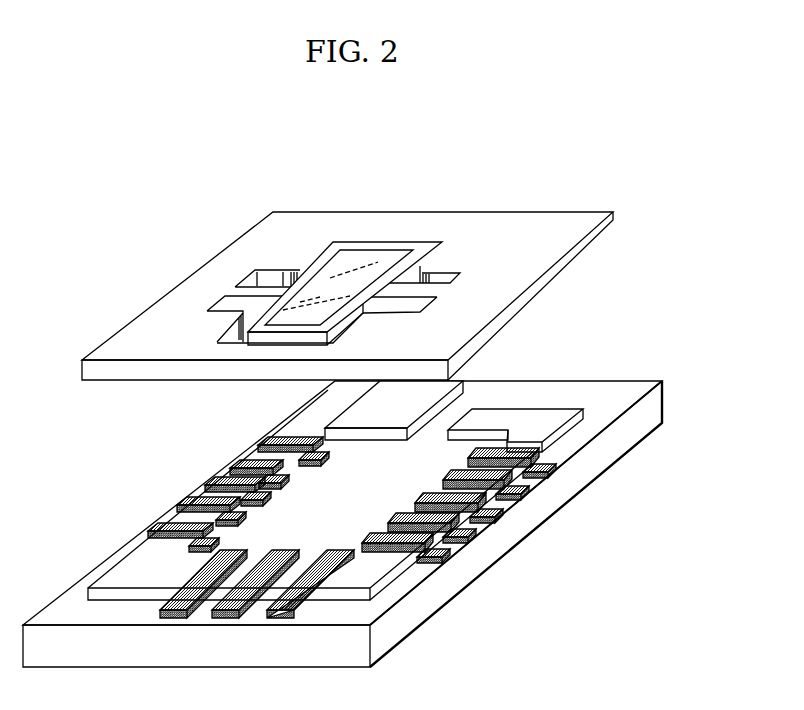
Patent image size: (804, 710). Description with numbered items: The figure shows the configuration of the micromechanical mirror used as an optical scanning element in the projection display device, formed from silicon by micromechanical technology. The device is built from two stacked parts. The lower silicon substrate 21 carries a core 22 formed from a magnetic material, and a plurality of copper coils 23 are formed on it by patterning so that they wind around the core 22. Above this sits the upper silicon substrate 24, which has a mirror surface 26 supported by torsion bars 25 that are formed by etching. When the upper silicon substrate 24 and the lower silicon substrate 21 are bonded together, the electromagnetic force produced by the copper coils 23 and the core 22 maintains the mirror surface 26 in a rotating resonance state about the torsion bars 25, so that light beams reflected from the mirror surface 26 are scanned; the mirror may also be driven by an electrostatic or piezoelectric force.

The lower silicon substrate 21 is at (417, 608).
The core 22 is at (553, 420).
The copper coils 23 is at (452, 550).
The upper silicon substrate 24 is at (137, 372).
The torsion bars 25 is at (403, 292).
The mirror surface 26 is at (293, 272).